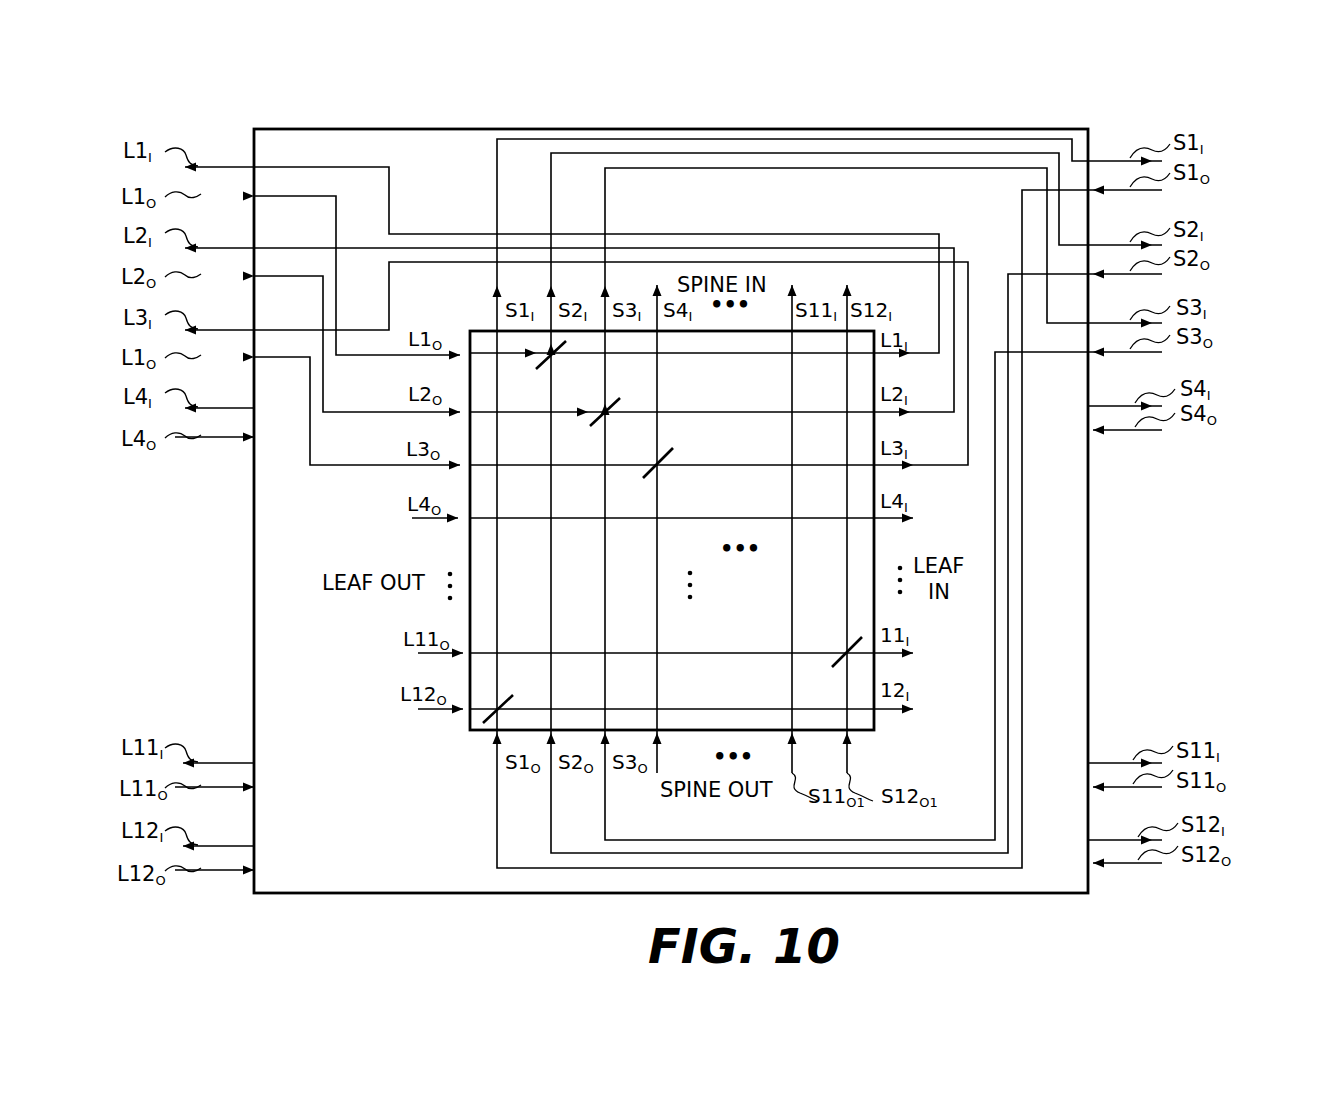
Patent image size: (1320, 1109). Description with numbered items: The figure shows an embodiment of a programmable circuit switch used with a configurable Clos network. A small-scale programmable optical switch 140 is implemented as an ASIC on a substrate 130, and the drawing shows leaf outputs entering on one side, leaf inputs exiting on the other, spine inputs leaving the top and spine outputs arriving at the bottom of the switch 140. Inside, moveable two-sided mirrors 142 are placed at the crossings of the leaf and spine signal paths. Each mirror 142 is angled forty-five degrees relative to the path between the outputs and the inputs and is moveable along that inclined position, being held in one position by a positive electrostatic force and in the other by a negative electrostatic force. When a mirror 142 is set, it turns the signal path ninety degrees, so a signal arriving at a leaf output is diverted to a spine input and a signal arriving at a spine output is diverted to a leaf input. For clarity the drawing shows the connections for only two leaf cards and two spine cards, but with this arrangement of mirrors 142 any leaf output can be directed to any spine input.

The substrate 130 is at (1063, 587).
The programmable optical switch 140 is at (857, 392).
The moveable two-sided mirror 142 is at (668, 462).